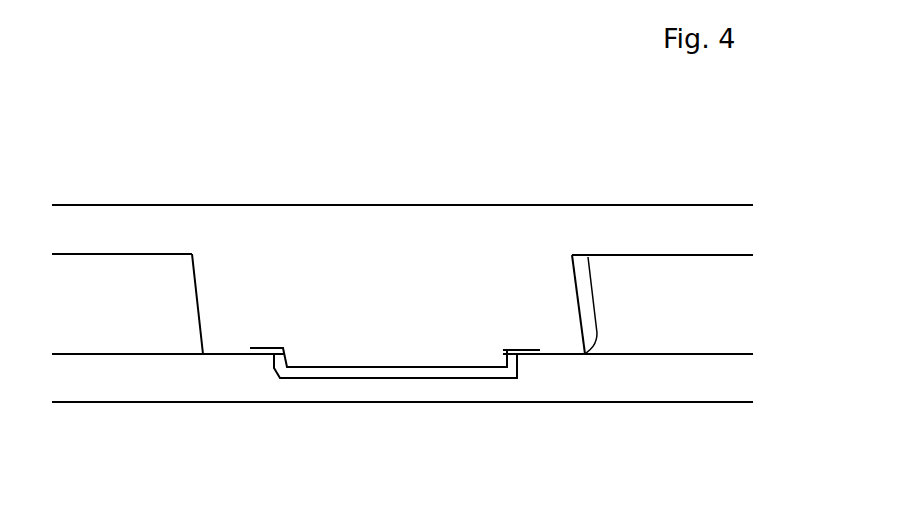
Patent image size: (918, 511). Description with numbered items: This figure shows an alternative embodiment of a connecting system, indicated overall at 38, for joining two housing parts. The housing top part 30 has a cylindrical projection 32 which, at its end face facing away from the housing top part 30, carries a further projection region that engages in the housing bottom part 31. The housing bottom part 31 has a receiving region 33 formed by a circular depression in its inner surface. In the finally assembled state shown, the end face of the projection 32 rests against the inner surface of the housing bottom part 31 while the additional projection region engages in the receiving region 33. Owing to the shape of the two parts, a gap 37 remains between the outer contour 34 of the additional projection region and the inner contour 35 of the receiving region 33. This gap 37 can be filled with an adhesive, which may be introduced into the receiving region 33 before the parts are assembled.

The semiconductor device 38 is at (88, 172).
The housing top part 30 is at (145, 223).
The housing bottom part 31 is at (172, 373).
The projection 32 is at (342, 280).
The receiving region 33 is at (520, 365).
The outer contour 34 is at (506, 351).
The inner contour 35 is at (274, 368).
The gap 37 is at (353, 372).